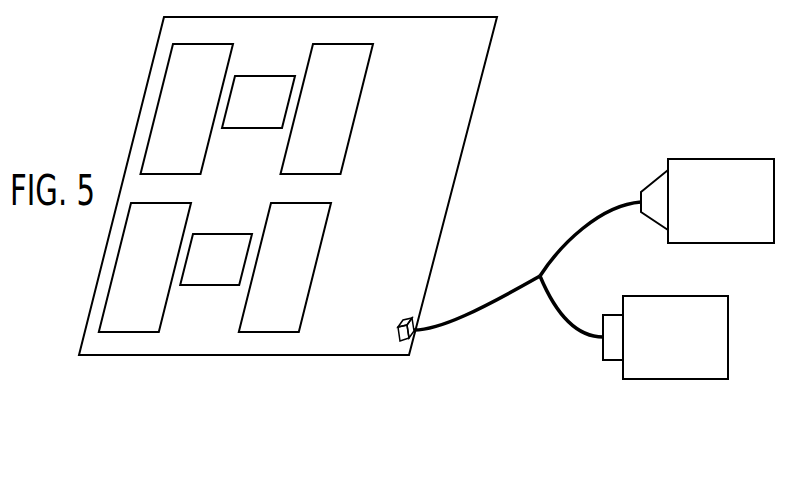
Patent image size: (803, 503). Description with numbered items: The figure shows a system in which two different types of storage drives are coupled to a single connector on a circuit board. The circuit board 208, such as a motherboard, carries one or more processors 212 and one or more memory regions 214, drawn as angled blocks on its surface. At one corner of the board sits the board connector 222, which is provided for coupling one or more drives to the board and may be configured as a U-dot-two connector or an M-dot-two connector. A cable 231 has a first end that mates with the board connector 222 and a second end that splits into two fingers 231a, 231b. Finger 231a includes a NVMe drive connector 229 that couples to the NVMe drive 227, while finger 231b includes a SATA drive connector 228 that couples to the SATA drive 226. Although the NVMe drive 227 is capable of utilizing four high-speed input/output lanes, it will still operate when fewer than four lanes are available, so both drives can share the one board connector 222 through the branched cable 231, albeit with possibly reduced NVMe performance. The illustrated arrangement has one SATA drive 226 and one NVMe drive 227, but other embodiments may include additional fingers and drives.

The circuit board 208 is at (475, 58).
The memory regions 214 is at (207, 122).
The processors 212 is at (278, 115).
The board connector 222 is at (407, 343).
The cable 231 is at (479, 313).
The finger 231a is at (578, 325).
The finger 231b is at (582, 222).
The SATA drive 226 is at (740, 217).
The SATA drive connector 228 is at (652, 207).
The NVMe drive 227 is at (695, 352).
The NVMe drive connector 229 is at (615, 362).